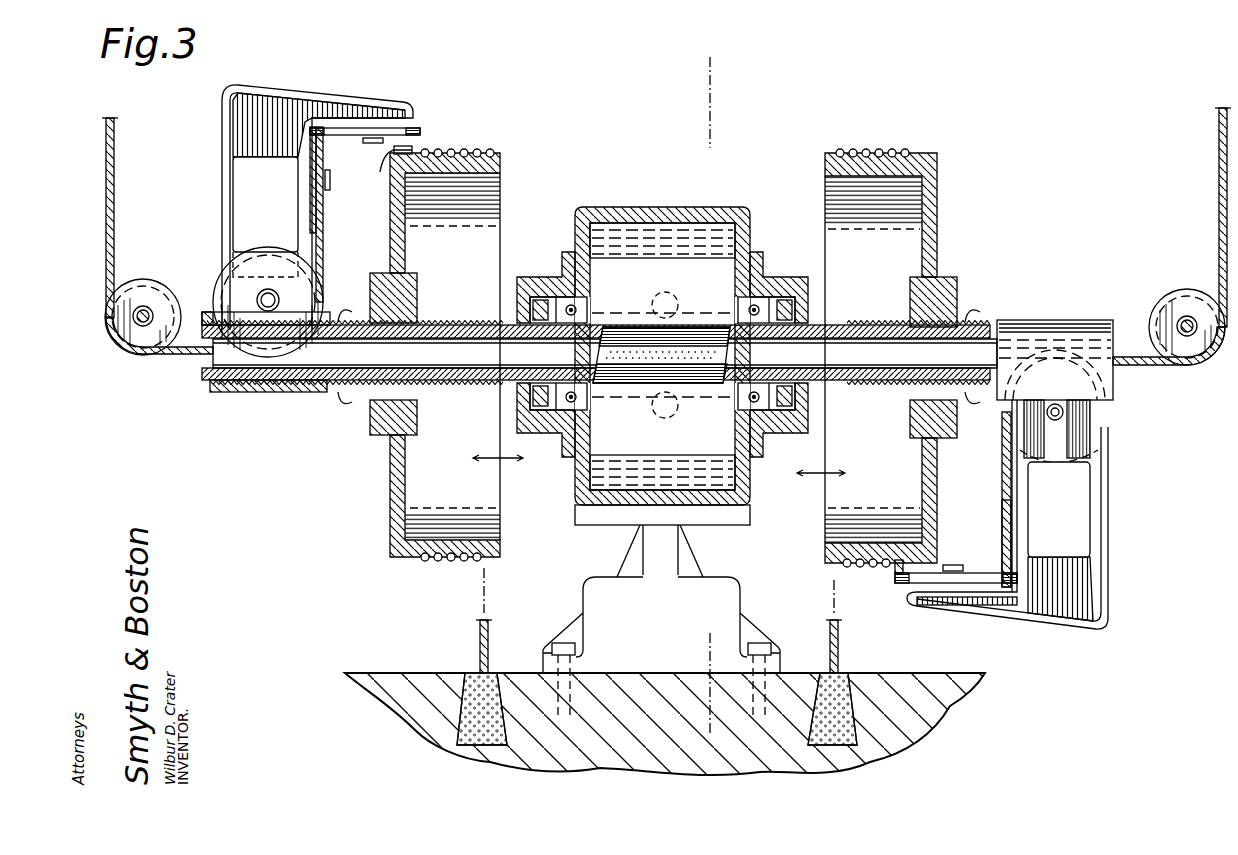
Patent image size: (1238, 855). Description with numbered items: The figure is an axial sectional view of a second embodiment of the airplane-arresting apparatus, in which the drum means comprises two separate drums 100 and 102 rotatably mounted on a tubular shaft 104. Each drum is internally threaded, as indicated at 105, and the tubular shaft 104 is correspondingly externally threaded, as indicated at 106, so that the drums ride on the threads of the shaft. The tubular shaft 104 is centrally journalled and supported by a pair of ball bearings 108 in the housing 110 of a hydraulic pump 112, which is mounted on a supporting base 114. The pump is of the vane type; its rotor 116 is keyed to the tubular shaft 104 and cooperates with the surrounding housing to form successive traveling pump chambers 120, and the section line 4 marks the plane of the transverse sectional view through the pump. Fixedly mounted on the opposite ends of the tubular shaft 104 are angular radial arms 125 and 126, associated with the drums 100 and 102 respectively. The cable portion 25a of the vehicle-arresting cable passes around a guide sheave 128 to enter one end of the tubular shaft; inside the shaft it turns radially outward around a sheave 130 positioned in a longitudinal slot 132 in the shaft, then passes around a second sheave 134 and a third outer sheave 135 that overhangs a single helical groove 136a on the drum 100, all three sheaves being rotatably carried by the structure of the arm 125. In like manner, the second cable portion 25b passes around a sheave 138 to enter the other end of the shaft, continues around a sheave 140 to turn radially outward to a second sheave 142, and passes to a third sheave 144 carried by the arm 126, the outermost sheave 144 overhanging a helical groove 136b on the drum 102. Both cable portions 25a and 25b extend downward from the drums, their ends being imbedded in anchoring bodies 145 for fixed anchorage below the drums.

The section line 4 is at (720, 76).
The first cable portion 25a is at (115, 190).
The second cable portion 25b is at (1218, 218).
The first drum 100 is at (509, 181).
The second drum 102 is at (947, 199).
The tubular shaft 104 is at (836, 332).
The internal threads 105 is at (402, 325).
The external threads 106 is at (398, 340).
The ball bearings 108 is at (570, 303).
The housing 110 is at (752, 217).
The hydraulic pump 112 is at (700, 201).
The supporting base 114 is at (735, 600).
The rotor 116 is at (725, 460).
The pump chambers 120 is at (616, 232).
The angular radial arm 125 is at (224, 178).
The angular radial arm 126 is at (1104, 500).
The guide sheave 128 is at (160, 282).
The sheave 130 is at (292, 256).
The longitudinal slot 132 is at (310, 340).
The second sheave 134 is at (325, 203).
The third outer sheave 135 is at (350, 137).
The helical groove 136a is at (383, 170).
The helical groove 136b is at (900, 585).
The sheave 138 is at (1165, 296).
The sheave 140 is at (1095, 418).
The second sheave 142 is at (1002, 530).
The third sheave 144 is at (975, 572).
The anchoring bodies 145 is at (492, 680).